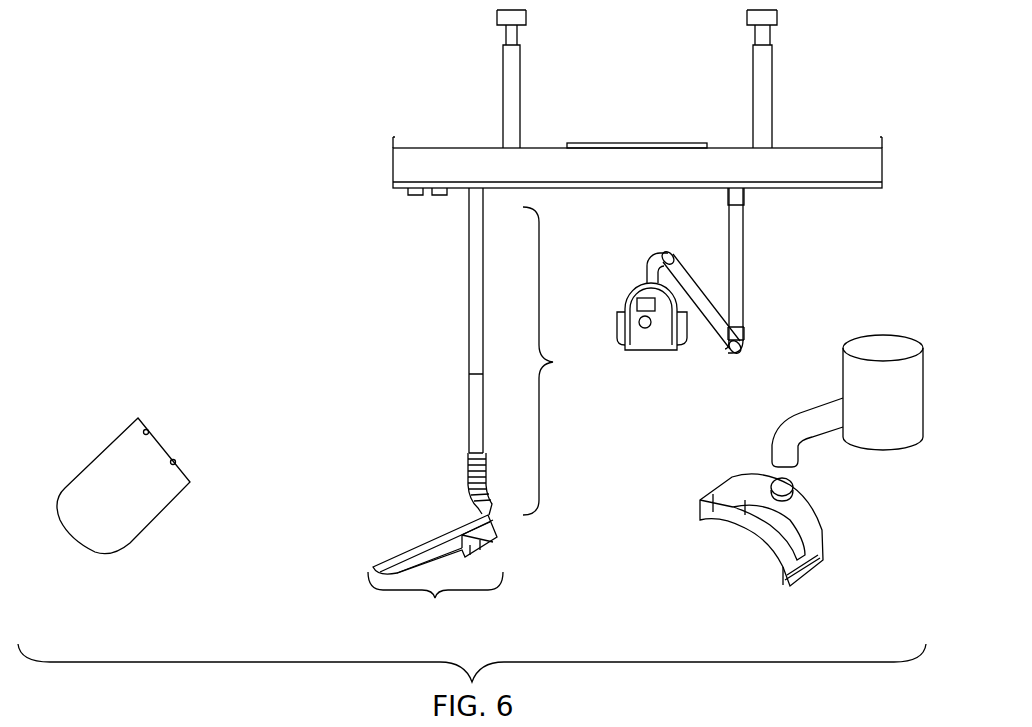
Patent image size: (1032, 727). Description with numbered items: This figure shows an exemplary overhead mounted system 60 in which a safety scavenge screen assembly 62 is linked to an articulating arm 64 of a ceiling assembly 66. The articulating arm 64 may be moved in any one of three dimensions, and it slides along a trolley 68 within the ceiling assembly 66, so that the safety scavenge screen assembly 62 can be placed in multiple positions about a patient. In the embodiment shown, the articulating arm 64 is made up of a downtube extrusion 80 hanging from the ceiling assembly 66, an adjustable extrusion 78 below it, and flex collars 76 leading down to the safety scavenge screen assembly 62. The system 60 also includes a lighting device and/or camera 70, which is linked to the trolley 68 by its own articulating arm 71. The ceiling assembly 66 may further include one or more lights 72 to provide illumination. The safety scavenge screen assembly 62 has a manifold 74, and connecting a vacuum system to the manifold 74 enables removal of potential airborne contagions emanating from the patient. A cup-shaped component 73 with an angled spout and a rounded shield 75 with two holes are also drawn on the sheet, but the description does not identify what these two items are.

The overhead mounted system 60 is at (870, 37).
The safety scavenge screen assembly 62 is at (435, 576).
The articulating arm 64 is at (556, 361).
The ceiling assembly 66 is at (789, 146).
The trolley 68 is at (818, 189).
The lighting device and/or camera 70 is at (678, 352).
The articulating arm 71 is at (744, 277).
The lights 72 is at (812, 160).
The cup 73 is at (842, 367).
The manifold 74 is at (818, 528).
The shield 75 is at (133, 538).
The flex collars 76 is at (469, 490).
The adjustable extrusion 78 is at (469, 392).
The downtube extrusion 80 is at (469, 263).